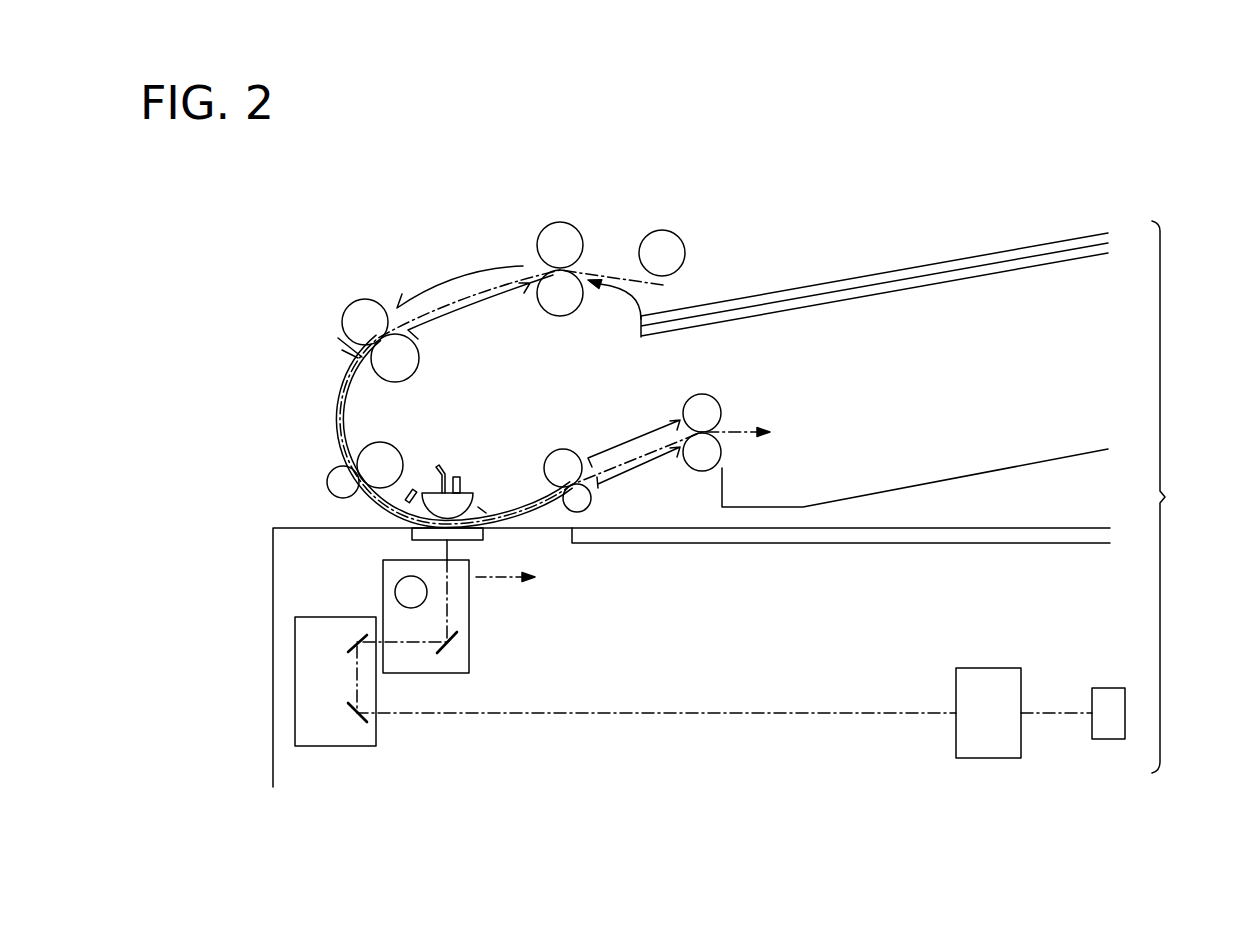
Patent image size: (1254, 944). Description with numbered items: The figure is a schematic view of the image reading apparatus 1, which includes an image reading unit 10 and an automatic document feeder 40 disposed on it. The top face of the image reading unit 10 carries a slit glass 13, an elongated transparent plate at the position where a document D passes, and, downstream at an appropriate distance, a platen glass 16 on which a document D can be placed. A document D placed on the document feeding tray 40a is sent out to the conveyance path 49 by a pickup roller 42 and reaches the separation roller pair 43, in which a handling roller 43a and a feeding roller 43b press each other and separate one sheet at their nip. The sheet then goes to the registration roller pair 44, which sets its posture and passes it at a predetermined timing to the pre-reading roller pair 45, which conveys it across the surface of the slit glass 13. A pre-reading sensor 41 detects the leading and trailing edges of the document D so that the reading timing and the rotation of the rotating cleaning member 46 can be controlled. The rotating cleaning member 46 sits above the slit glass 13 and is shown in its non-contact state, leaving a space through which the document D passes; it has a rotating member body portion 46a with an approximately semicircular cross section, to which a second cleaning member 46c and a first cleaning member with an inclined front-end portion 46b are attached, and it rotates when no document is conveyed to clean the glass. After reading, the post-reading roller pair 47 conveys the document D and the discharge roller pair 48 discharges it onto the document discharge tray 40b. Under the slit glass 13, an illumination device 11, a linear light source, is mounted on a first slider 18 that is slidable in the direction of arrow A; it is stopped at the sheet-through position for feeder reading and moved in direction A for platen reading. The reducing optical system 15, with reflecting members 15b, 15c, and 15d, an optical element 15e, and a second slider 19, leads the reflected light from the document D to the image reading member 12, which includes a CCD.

The image reading apparatus 1 is at (1169, 497).
The image reading unit 10 is at (255, 545).
The illumination device 11 is at (423, 609).
The image reading member 12 is at (1107, 687).
The slit glass 13 is at (410, 534).
The reducing optical system 15 is at (446, 734).
The reflecting member 15b is at (462, 640).
The reflecting member 15c is at (357, 636).
The reflecting member 15d is at (354, 716).
The optical element 15e is at (990, 667).
The platen glass 16 is at (884, 546).
The first slider 18 is at (391, 590).
The second slider 19 is at (301, 681).
The automatic document feeder 40 is at (313, 368).
The document feeding tray 40a is at (992, 276).
The document discharge tray 40b is at (1036, 463).
The pre-reading sensor 41 is at (412, 490).
The pickup roller 42 is at (685, 246).
The separation roller pair 43 is at (564, 258).
The handling roller 43a is at (573, 313).
The feeding roller 43b is at (545, 226).
The registration roller pair 44 is at (362, 287).
The pre-reading roller pair 45 is at (311, 474).
The rotating cleaning member 46 is at (473, 455).
The rotating member body portion 46a is at (472, 490).
The inclined front-end portion 46b is at (441, 466).
The second cleaning member 46c is at (462, 475).
The post-reading roller pair 47 is at (587, 440).
The discharge roller pair 48 is at (732, 397).
The conveyance path 49 is at (448, 299).
The arrow A is at (505, 564).
The document D is at (956, 259).